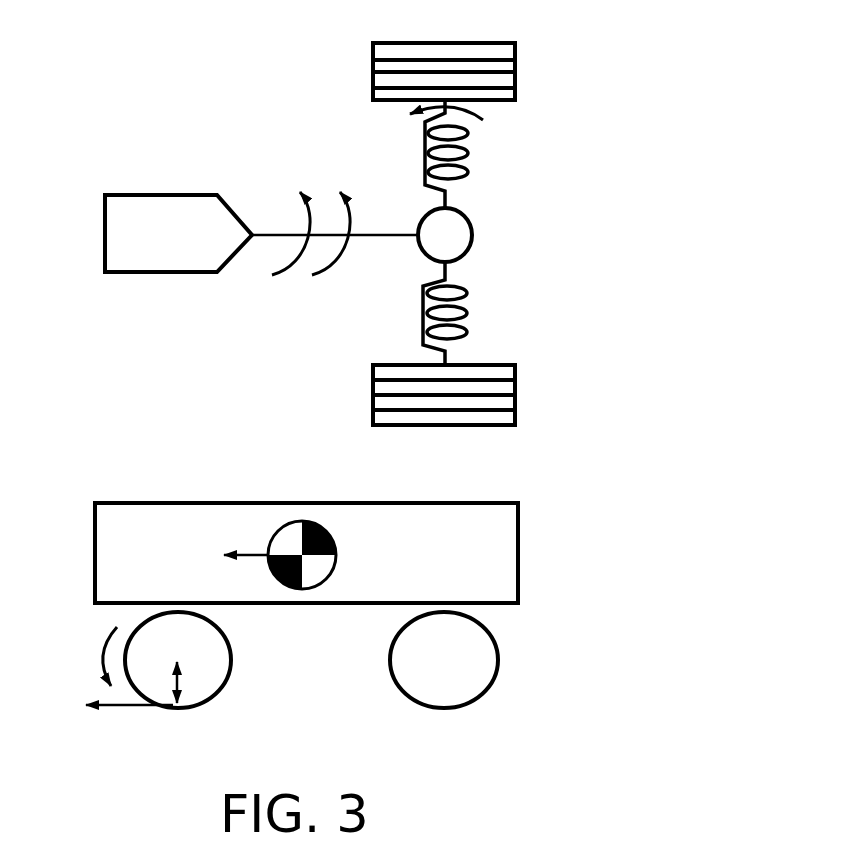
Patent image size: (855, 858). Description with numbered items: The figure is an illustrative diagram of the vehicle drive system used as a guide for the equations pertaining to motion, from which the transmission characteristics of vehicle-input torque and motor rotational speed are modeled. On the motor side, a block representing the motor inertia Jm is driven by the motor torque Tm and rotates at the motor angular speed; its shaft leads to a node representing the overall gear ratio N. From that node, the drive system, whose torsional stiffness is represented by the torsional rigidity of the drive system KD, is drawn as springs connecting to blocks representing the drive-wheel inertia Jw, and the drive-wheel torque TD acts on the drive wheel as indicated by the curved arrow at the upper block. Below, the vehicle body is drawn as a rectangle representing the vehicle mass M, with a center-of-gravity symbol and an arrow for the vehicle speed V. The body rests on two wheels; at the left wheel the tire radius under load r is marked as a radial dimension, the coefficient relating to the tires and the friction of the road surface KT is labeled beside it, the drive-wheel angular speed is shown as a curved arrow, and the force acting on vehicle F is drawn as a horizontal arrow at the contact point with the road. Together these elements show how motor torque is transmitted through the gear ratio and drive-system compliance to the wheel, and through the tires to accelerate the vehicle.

The drive-wheel inertia Jw is at (444, 53).
The drive-wheel torque TD is at (431, 124).
The torsional rigidity of the drive system KD is at (471, 154).
The overall gear ratio N is at (459, 235).
The motor inertia Jm is at (178, 233).
The motor torque Tm is at (346, 246).
The vehicle mass M is at (306, 553).
The vehicle speed V is at (232, 558).
The coefficient relating to the tires and the friction of the road surface KT is at (204, 660).
The tire radius under load r is at (165, 682).
The force acting on vehicle F is at (112, 706).